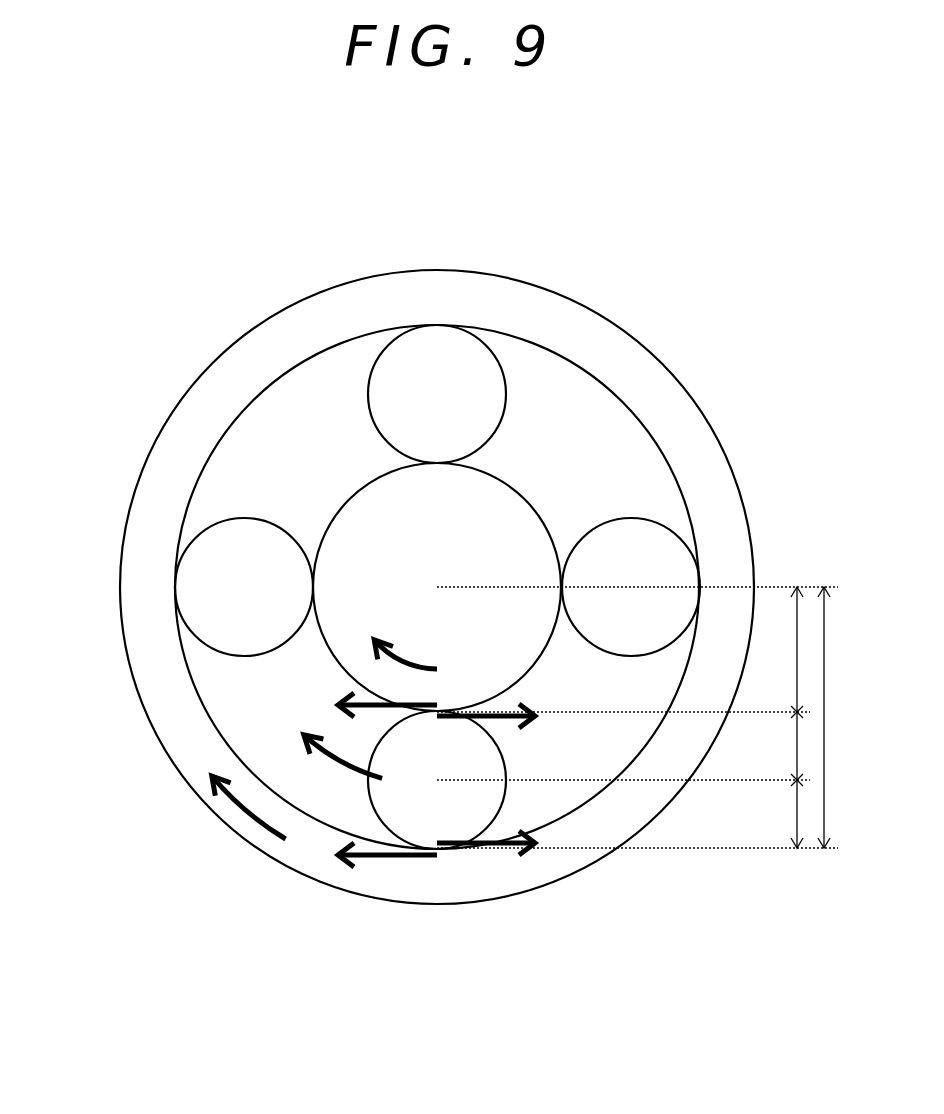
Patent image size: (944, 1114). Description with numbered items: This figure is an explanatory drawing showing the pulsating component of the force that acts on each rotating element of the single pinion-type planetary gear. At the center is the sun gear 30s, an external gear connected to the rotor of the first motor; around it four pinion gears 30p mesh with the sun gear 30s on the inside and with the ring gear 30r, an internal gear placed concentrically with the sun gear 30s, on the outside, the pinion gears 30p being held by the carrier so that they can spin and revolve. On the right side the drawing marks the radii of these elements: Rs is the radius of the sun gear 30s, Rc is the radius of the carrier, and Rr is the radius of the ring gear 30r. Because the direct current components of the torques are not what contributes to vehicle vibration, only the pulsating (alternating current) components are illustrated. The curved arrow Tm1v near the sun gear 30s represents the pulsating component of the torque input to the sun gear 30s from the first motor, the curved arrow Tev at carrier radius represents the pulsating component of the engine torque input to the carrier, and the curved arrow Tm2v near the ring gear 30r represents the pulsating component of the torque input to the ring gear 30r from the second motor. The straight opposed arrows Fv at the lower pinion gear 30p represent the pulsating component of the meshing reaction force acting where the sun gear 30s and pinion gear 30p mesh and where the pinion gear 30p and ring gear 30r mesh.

The ring gear 30r is at (678, 422).
The sun gear 30s is at (510, 545).
The pinion gear 30p is at (463, 365).
The pulsating component of torque Tm1 Tm1v is at (403, 663).
The pulsating component of torque Tm2 Tm2v is at (247, 810).
The pulsating component of torque Te Tev is at (340, 763).
The pulsating component of meshing reaction force F Fv is at (380, 705).
The radius of the sun gear Rs is at (780, 652).
The radius of the carrier Rc is at (780, 780).
The radius of the ring gear Rr is at (838, 717).